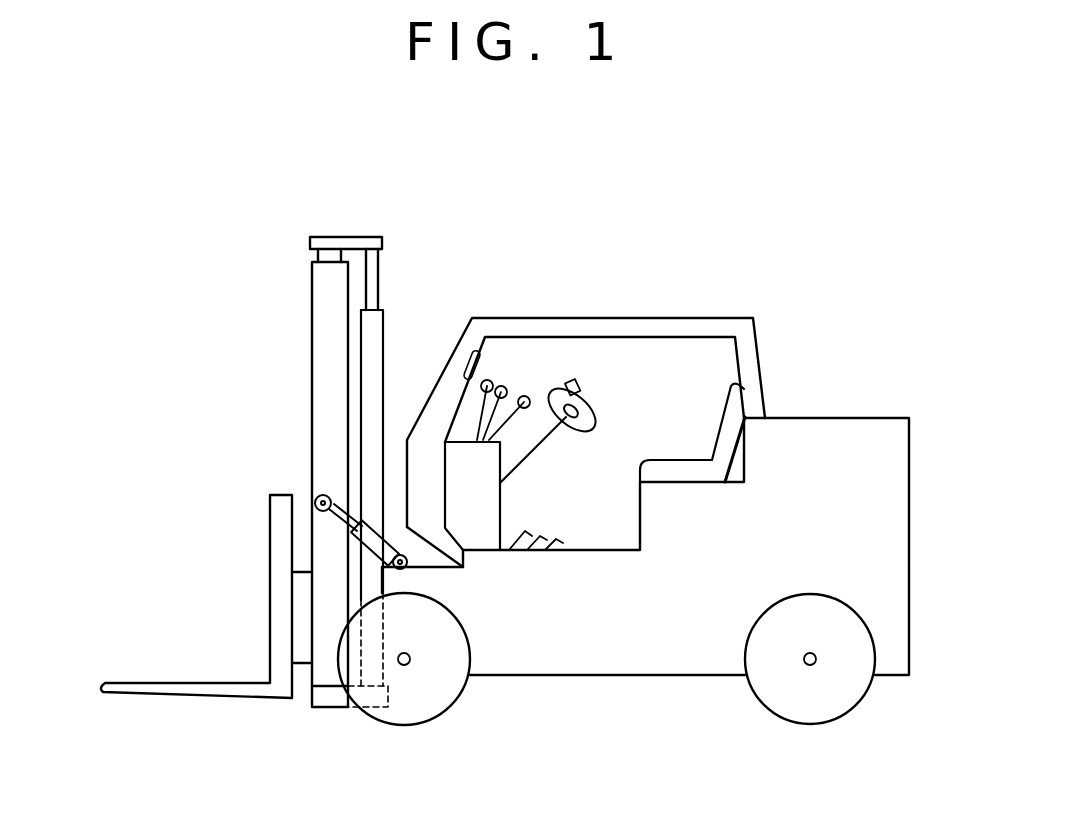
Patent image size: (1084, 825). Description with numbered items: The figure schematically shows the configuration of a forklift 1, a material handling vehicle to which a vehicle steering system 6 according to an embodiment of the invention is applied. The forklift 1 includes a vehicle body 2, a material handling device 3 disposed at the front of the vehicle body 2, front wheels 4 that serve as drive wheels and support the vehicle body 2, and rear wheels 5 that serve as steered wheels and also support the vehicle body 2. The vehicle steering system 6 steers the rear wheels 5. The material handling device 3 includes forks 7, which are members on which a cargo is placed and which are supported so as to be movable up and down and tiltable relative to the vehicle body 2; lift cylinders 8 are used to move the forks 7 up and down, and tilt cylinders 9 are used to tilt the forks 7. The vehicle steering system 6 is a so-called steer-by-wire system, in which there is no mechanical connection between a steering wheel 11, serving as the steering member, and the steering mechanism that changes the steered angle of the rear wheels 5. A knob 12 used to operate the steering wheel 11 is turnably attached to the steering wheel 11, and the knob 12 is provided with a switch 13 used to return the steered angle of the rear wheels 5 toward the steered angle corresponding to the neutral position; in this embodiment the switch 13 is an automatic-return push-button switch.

The forklift 1 is at (772, 342).
The vehicle body 2 is at (612, 663).
The material handling device 3 is at (300, 402).
The front wheels 4 is at (425, 708).
The rear wheels 5 is at (832, 707).
The vehicle steering system 6 is at (564, 465).
The forks 7 is at (188, 688).
The lift cylinders 8 is at (383, 332).
The tilt cylinders 9 is at (392, 537).
The steering wheel 11 is at (590, 428).
The knob 12 is at (580, 397).
The switch 13 is at (570, 383).